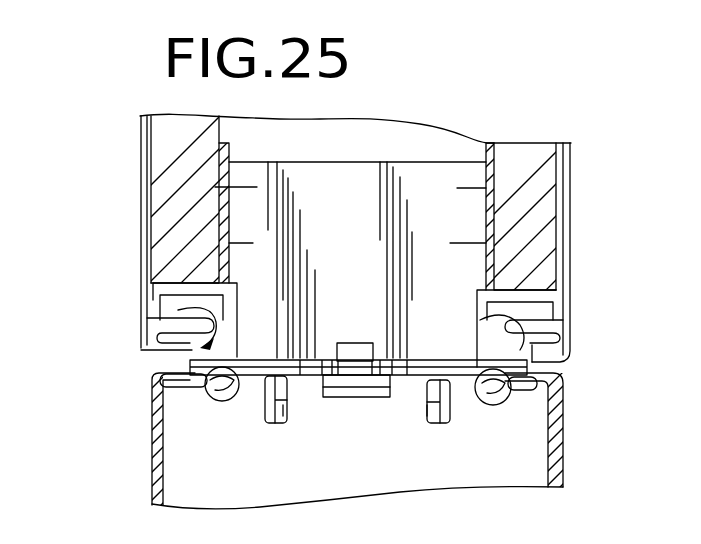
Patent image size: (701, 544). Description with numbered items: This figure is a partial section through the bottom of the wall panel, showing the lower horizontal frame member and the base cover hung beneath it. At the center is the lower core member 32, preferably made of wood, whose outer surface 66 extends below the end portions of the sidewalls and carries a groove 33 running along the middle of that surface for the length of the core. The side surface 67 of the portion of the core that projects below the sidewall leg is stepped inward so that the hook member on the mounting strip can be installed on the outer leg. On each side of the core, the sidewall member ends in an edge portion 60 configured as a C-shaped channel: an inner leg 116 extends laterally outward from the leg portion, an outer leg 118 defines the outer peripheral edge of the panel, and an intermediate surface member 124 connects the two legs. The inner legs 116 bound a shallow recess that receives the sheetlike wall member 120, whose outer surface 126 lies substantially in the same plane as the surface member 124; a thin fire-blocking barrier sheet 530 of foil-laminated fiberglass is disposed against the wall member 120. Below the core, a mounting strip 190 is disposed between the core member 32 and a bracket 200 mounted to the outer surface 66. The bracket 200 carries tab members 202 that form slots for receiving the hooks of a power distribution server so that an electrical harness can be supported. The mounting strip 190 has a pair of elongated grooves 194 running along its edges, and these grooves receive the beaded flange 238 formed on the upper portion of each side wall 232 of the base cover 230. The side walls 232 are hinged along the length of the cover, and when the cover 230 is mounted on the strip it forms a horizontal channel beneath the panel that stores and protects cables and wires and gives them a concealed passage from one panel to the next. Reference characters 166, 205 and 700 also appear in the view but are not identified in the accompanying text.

The lower core member 32 is at (427, 177).
The groove 33 is at (360, 343).
The edge portion 60 is at (147, 333).
The outer surface 66 is at (268, 372).
The side surface 67 is at (238, 172).
The inner leg 116 is at (222, 270).
The outer leg 118 is at (227, 307).
The wall member 120 is at (173, 238).
The intermediate surface member 124 is at (153, 302).
The outer surface 126 is at (567, 171).
The hook clip 166 is at (213, 342).
The mounting strip 190 is at (460, 387).
The elongated grooves 194 is at (220, 392).
The bracket 200 is at (272, 374).
The tab members 202 is at (427, 407).
The mounting block 205 is at (347, 398).
The base cover 230 is at (150, 487).
The side walls 232 is at (153, 447).
The beaded flange 238 is at (165, 385).
The barrier sheet 530 is at (153, 223).
The seal strip 700 is at (457, 188).